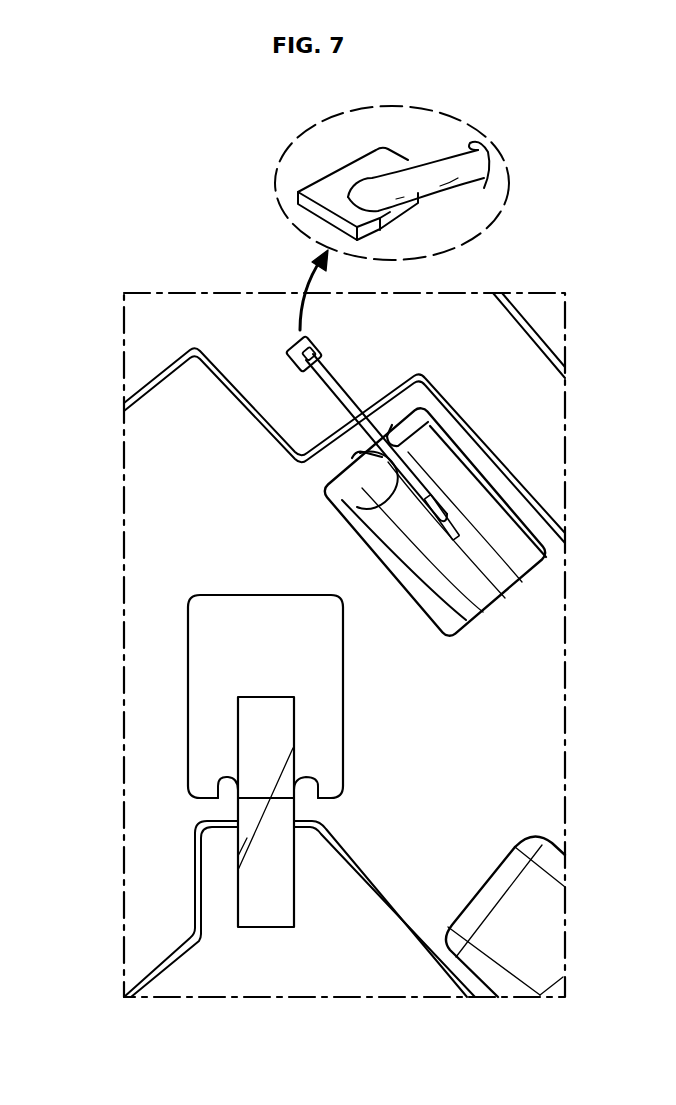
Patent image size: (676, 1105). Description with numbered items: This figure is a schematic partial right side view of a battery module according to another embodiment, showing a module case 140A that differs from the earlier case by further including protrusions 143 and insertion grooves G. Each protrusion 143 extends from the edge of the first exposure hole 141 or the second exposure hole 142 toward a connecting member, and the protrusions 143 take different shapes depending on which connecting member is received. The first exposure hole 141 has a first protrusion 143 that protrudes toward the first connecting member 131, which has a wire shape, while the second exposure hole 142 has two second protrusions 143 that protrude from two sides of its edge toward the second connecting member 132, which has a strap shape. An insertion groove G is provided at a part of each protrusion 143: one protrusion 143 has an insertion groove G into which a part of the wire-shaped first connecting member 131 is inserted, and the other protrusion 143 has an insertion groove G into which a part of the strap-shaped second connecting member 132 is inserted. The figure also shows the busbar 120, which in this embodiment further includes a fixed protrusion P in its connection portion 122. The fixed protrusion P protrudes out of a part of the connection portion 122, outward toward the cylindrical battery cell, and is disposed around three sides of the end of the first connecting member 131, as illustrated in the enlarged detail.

The busbar 120 is at (222, 316).
The connection portion 122 is at (293, 440).
The first connecting member 131 is at (335, 394).
The second connecting member 132 is at (280, 930).
The module case 140A is at (152, 518).
The first exposure hole 141 is at (522, 589).
The second exposure hole 142 is at (344, 692).
The protrusion 143 is at (357, 507).
The fixed protrusion P is at (320, 353).
The insertion groove G is at (392, 495).